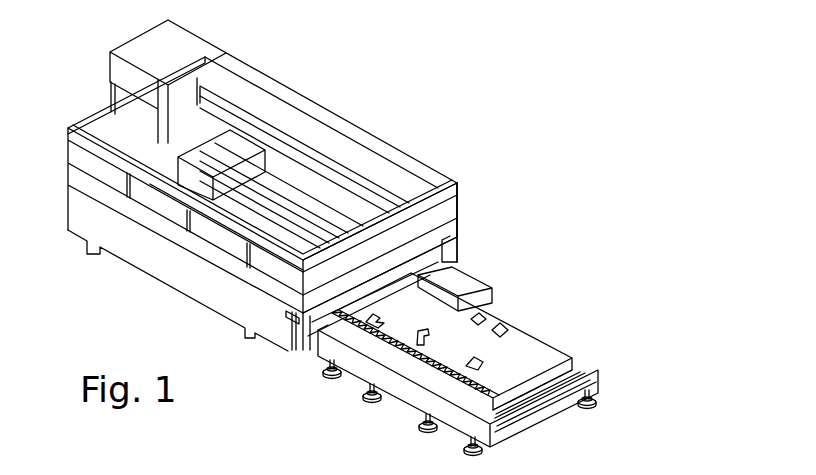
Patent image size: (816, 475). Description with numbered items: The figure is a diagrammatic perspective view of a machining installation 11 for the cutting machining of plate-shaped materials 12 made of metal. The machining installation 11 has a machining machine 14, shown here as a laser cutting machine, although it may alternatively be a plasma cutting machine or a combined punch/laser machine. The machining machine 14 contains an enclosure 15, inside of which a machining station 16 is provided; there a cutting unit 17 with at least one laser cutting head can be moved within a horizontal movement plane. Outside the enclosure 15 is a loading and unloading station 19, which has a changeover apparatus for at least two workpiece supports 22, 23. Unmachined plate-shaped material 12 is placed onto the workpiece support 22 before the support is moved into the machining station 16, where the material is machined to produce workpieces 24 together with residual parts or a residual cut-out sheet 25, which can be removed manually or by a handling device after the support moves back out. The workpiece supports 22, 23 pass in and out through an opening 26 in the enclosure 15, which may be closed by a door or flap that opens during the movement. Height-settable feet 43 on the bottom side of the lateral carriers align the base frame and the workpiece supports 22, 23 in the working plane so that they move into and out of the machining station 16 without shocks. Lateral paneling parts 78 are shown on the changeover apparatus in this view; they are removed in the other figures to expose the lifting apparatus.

The machining installation 11 is at (477, 114).
The plate-shaped material 12 is at (459, 359).
The machining machine 14 is at (274, 185).
The enclosure 15 is at (448, 208).
The machining station 16 is at (240, 211).
The cutting unit 17 is at (151, 155).
The loading and unloading station 19 is at (459, 359).
The workpiece support 22 is at (568, 385).
The workpiece support 23 is at (543, 413).
The workpieces 24 is at (502, 325).
The residual cut-out sheet 25 is at (542, 352).
The opening 26 is at (448, 268).
The feet 43 is at (322, 375).
The lateral paneling parts 78 is at (400, 392).